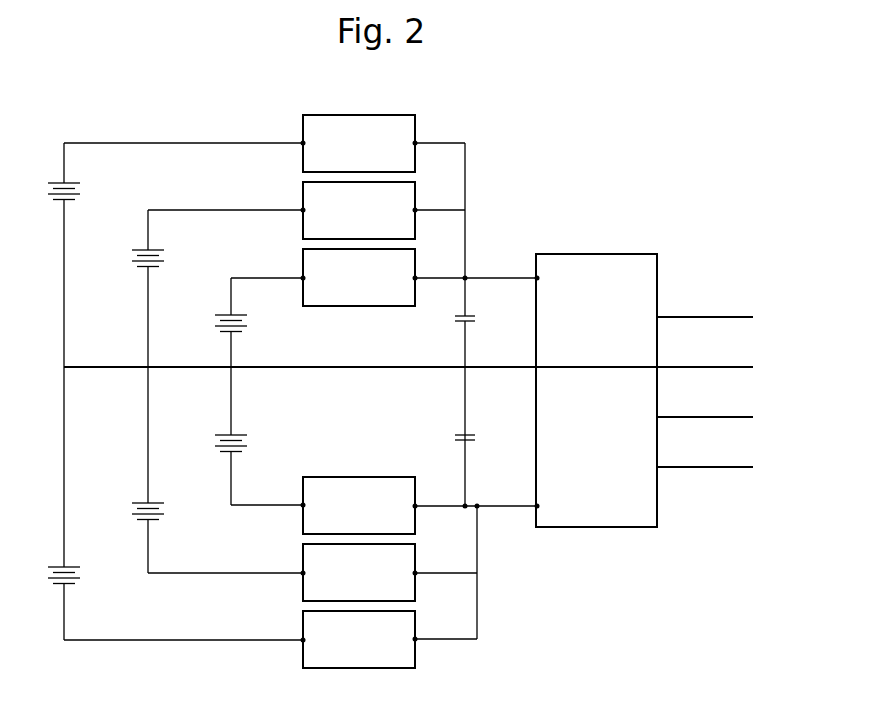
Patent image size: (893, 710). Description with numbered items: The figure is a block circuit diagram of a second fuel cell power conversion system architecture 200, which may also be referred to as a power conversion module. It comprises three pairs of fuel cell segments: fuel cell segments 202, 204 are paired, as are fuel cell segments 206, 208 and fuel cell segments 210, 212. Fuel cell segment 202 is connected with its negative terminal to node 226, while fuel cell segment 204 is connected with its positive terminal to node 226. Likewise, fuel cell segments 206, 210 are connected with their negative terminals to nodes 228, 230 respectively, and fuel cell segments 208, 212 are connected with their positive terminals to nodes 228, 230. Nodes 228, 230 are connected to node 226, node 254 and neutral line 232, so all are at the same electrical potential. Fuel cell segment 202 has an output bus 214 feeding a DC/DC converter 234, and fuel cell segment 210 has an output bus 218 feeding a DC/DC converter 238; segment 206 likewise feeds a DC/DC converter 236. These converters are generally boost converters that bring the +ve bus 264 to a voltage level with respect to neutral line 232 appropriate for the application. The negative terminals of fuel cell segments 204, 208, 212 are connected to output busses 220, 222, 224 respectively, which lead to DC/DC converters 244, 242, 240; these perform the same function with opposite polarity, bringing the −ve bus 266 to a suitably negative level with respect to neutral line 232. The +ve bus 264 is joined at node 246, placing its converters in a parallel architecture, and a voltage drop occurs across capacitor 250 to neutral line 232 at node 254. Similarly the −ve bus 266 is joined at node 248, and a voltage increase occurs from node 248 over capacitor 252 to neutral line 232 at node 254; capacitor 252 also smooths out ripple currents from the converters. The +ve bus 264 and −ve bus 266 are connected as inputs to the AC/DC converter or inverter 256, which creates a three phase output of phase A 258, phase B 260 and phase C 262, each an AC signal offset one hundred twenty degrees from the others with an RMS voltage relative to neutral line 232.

The fuel cell power conversion system architecture 200 is at (692, 222).
The fuel cell segment 202 is at (45, 172).
The fuel cell segment 204 is at (45, 561).
The fuel cell segment 206 is at (130, 238).
The fuel cell segment 208 is at (129, 496).
The fuel cell segment 210 is at (212, 305).
The fuel cell segment 212 is at (212, 428).
The output bus 214 is at (178, 143).
The output bus 218 is at (262, 278).
The output bus 220 is at (193, 640).
The output bus 222 is at (207, 573).
The output bus 224 is at (275, 505).
The node 226 is at (66, 367).
The node 228 is at (150, 367).
The node 230 is at (233, 367).
The neutral line 232 is at (757, 358).
The DC/DC converter 234 is at (303, 125).
The DC/DC converter 236 is at (200, 210).
The DC/DC converter 238 is at (350, 307).
The DC/DC converter 240 is at (350, 477).
The DC/DC converter 242 is at (303, 554).
The DC/DC converter 244 is at (303, 620).
The node 246 is at (465, 277).
The node 248 is at (473, 503).
The capacitor 250 is at (478, 314).
The capacitor 252 is at (478, 437).
The node 254 is at (466, 368).
The AC/DC converter or inverter 256 is at (582, 302).
The phase A 258 is at (757, 306).
The phase B 260 is at (757, 407).
The phase C 262 is at (757, 458).
The +ve bus 264 is at (465, 160).
The −ve bus 266 is at (477, 612).